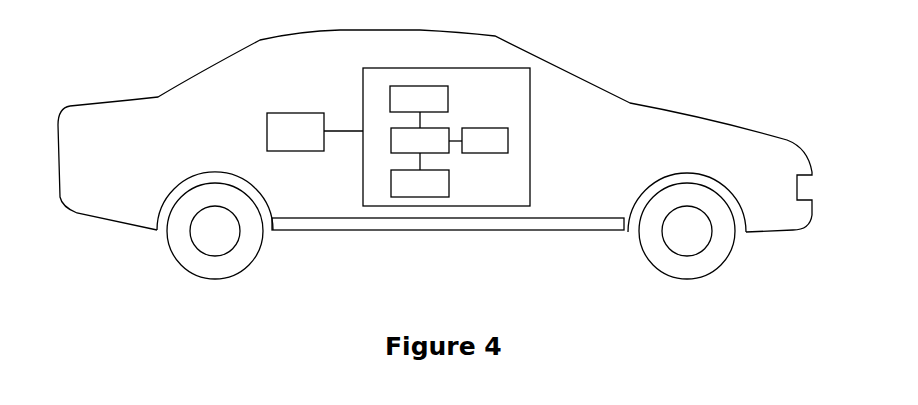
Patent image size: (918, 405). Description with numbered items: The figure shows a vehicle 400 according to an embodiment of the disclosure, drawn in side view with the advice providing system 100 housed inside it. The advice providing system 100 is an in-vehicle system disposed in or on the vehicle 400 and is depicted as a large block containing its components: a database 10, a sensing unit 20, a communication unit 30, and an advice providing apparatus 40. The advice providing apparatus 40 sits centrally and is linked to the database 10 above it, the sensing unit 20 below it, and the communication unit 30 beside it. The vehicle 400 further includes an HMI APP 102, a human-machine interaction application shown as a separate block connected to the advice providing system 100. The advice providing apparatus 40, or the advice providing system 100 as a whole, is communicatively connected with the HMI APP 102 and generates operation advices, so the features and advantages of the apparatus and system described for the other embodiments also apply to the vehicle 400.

The vehicle 400 is at (517, 46).
The advice providing system 100 is at (506, 95).
The database 10 is at (419, 107).
The sensing unit 20 is at (420, 183).
The communication unit 30 is at (485, 140).
The advice providing apparatus 40 is at (426, 149).
The HMI APP 102 is at (315, 132).